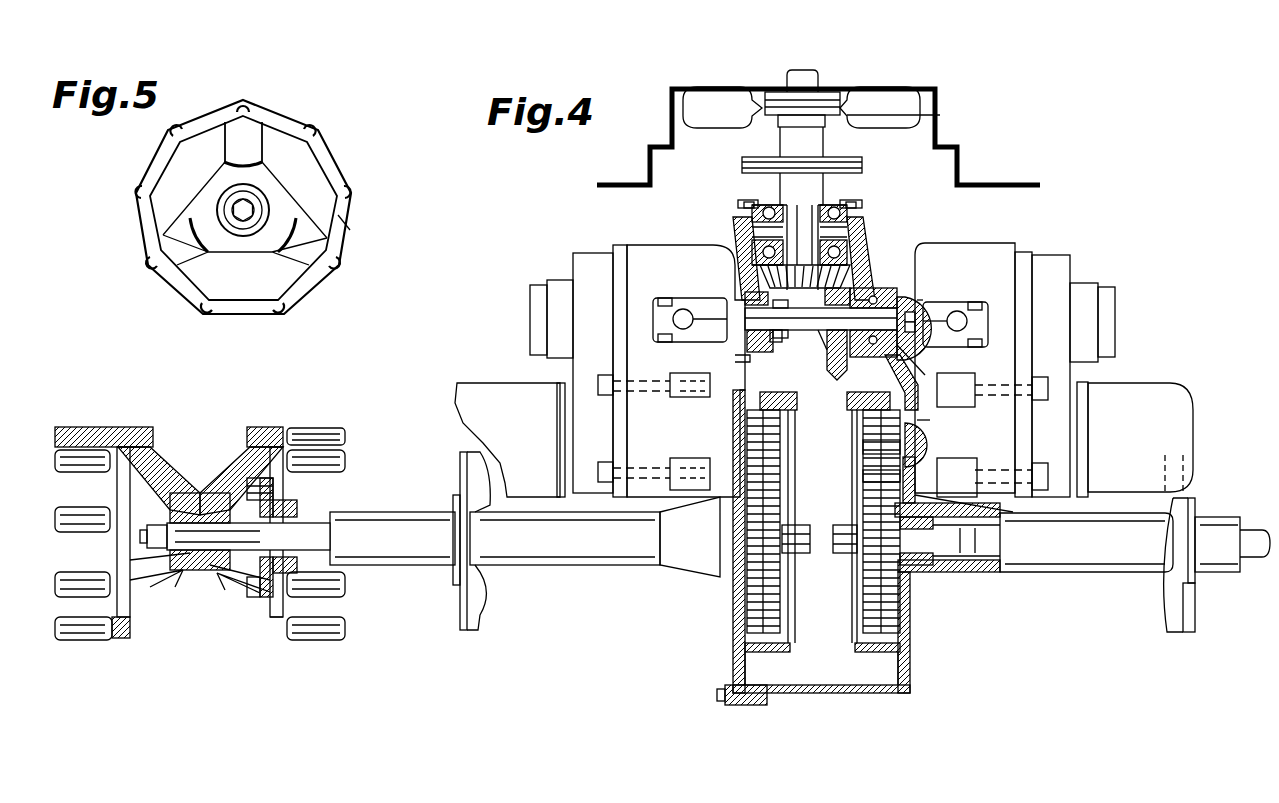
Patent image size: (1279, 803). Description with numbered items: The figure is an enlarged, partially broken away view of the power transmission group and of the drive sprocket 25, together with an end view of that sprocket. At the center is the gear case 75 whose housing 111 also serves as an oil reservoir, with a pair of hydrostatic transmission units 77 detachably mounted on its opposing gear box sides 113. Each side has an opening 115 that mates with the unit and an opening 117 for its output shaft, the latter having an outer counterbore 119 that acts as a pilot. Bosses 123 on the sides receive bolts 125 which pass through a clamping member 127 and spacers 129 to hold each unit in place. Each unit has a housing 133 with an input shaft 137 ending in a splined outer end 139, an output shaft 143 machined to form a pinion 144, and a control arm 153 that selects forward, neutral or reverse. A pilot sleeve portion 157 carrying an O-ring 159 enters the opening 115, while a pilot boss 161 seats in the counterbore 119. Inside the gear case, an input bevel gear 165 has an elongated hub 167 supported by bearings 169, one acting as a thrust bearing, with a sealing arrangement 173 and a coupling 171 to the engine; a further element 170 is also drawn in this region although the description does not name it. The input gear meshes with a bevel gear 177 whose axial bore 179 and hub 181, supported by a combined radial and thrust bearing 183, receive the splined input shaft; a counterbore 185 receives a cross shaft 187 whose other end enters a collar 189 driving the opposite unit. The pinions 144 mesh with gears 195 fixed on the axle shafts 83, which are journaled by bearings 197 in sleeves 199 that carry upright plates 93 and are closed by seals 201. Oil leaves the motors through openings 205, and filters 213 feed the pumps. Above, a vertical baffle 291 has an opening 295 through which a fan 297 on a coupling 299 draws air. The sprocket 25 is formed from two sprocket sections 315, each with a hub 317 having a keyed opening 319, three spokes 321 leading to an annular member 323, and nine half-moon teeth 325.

In FIG. 5, the sprocket 25 is at (340, 158).
In FIG. 4, the sprocket 25 is at (90, 430).
In FIG. 4, the gear case 75 is at (835, 657).
In FIG. 4, the hydrostatic transmission unit 77 is at (540, 320).
In FIG. 4, the axle shaft 83 is at (355, 565).
In FIG. 4, the plate 93 is at (478, 598).
In FIG. 4, the housing 111 is at (855, 693).
In FIG. 4, the gear box side 113 is at (733, 660).
In FIG. 4, the opening 115 is at (912, 310).
In FIG. 4, the opening 117 is at (905, 405).
In FIG. 4, the counterbore 119 is at (917, 413).
In FIG. 4, the boss 123 is at (688, 460).
In FIG. 4, the bolt 125 is at (598, 472).
In FIG. 4, the clamping member 127 is at (618, 378).
In FIG. 4, the spacer 129 is at (643, 470).
In FIG. 4, the housing 133 is at (663, 265).
In FIG. 4, the input shaft 137 is at (918, 325).
In FIG. 4, the splined outer end 139 is at (918, 312).
In FIG. 4, the output shaft 143 is at (865, 450).
In FIG. 4, the pinion 144 is at (862, 440).
In FIG. 4, the control arm 153 is at (720, 315).
In FIG. 4, the pilot sleeve portion 157 is at (950, 300).
In FIG. 4, the O-ring 159 is at (870, 295).
In FIG. 4, the pilot boss 161 is at (880, 478).
In FIG. 4, the input bevel gear 165 is at (745, 285).
In FIG. 4, the hub 167 is at (770, 225).
In FIG. 4, the bearing 169 is at (760, 210).
In FIG. 4, the spacer 170 is at (850, 225).
In FIG. 4, the coupling 171 is at (830, 185).
In FIG. 4, the sealing arrangement 173 is at (768, 197).
In FIG. 4, the bevel gear 177 is at (797, 405).
In FIG. 4, the axial bore 179 is at (810, 320).
In FIG. 4, the hub 181 is at (918, 355).
In FIG. 4, the bearing 183 is at (880, 290).
In FIG. 4, the counterbore 185 is at (840, 338).
In FIG. 4, the cross shaft 187 is at (780, 333).
In FIG. 4, the collar 189 is at (822, 310).
In FIG. 4, the gear 195 is at (865, 600).
In FIG. 4, the bearing 197 is at (925, 572).
In FIG. 4, the sleeve 199 is at (595, 570).
In FIG. 4, the seal 201 is at (245, 478).
In FIG. 4, the opening 205 is at (925, 455).
In FIG. 4, the filter 213 is at (515, 424).
In FIG. 4, the vertical baffle 291 is at (945, 183).
In FIG. 4, the opening 295 is at (905, 135).
In FIG. 4, the fan 297 is at (905, 108).
In FIG. 4, the coupling 299 is at (812, 92).
In FIG. 4, the sprocket section 315 is at (198, 490).
In FIG. 5, the hub 317 is at (262, 212).
In FIG. 4, the hub 317 is at (200, 575).
In FIG. 4, the keyed opening 319 is at (213, 585).
In FIG. 5, the spoke 321 is at (238, 140).
In FIG. 4, the spoke 321 is at (160, 465).
In FIG. 5, the annular member 323 is at (341, 224).
In FIG. 4, the annular member 323 is at (145, 445).
In FIG. 5, the tooth 325 is at (350, 196).
In FIG. 4, the tooth 325 is at (80, 465).